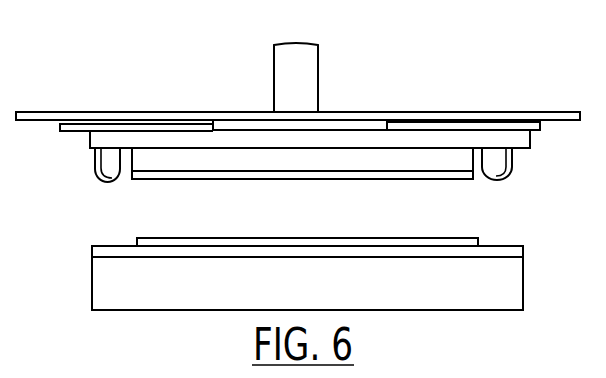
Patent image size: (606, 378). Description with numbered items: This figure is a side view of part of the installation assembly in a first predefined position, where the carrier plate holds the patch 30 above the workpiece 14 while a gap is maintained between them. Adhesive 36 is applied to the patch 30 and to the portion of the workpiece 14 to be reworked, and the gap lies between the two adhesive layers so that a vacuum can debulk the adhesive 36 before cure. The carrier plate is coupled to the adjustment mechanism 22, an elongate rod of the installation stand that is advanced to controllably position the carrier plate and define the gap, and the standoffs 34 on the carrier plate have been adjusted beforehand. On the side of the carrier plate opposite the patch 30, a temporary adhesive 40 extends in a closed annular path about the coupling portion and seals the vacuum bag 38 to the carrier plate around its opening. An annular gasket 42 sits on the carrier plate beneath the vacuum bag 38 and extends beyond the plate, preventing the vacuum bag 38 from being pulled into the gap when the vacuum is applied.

The workpiece 14 is at (424, 137).
The adjustment mechanism 22 is at (298, 57).
The patch 30 is at (340, 163).
The standoffs 34 is at (105, 167).
The adhesive 36 is at (175, 181).
The vacuum bag 38 is at (107, 111).
The temporary adhesive 40 is at (247, 125).
The gasket 42 is at (187, 125).